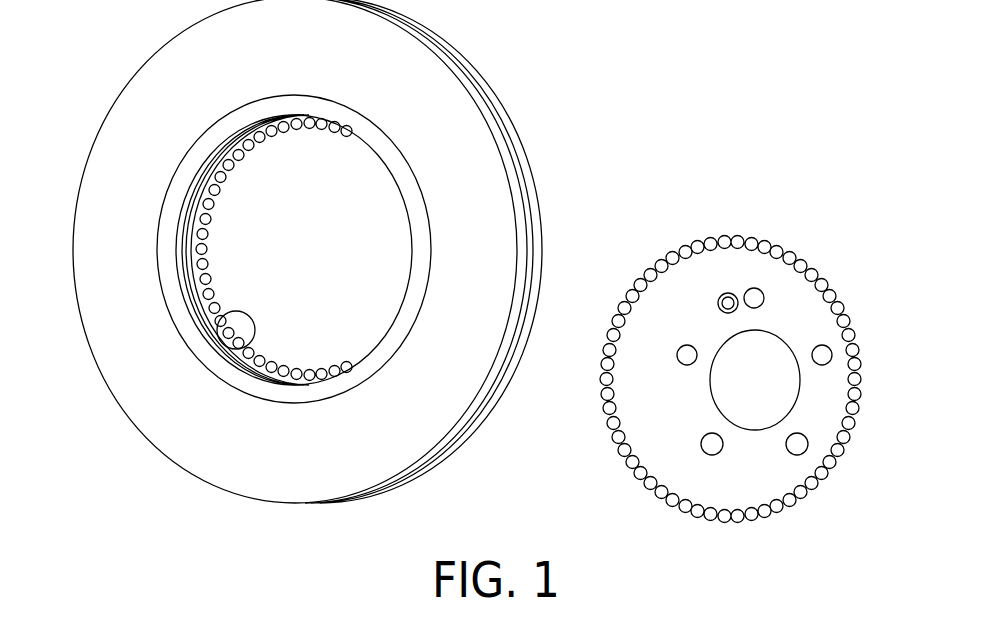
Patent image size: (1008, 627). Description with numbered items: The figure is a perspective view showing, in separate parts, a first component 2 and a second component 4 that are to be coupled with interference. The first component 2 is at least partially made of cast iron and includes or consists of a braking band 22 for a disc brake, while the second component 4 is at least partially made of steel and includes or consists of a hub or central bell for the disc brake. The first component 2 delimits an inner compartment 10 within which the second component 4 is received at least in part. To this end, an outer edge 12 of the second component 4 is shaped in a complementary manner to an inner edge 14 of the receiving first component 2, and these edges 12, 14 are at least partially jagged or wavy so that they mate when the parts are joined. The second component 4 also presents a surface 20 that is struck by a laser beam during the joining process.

The first component 2 is at (350, 293).
The second component 4 is at (733, 394).
The inner compartment 10 is at (343, 245).
The outer edge 12 is at (820, 278).
The inner edge 14 is at (245, 335).
The surface 20 is at (646, 268).
The braking band 22 is at (232, 467).